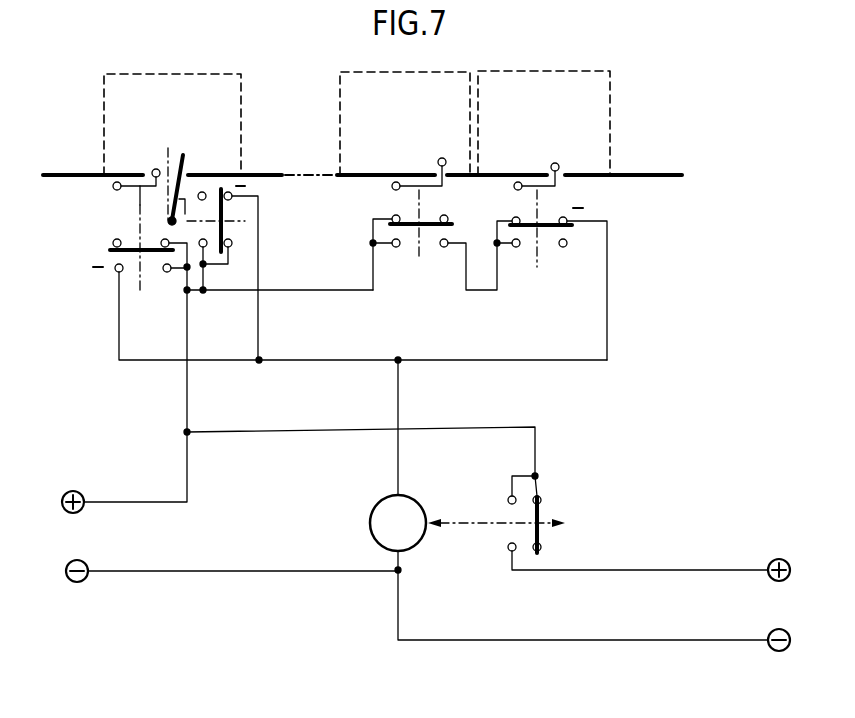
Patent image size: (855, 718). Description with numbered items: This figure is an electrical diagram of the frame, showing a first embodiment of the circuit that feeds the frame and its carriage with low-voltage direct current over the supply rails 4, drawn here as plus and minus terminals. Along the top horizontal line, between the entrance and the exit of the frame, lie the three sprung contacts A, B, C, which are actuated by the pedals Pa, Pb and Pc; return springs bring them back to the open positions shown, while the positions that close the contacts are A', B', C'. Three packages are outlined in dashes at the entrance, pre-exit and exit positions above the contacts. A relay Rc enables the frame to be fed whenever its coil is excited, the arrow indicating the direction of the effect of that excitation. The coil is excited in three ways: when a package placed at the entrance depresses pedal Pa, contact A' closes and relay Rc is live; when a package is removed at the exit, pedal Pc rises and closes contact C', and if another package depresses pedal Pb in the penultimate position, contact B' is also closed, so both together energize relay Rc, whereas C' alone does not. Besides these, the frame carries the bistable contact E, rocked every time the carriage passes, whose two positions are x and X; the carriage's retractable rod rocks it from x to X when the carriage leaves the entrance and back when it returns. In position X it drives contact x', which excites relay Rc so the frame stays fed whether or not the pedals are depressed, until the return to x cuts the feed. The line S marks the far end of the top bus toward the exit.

The supply rails 4 is at (785, 605).
The bistable contact E is at (91, 162).
The output bus terminal S is at (627, 162).
The contact A is at (136, 221).
The contact B is at (419, 203).
The contact C is at (536, 207).
The contact position X is at (202, 179).
The contact X' x' is at (228, 273).
The closed position of contact A A' is at (345, 370).
The closed position of contact B B' is at (441, 252).
The closed position of contact C C' is at (558, 280).
The relay Rc is at (428, 500).